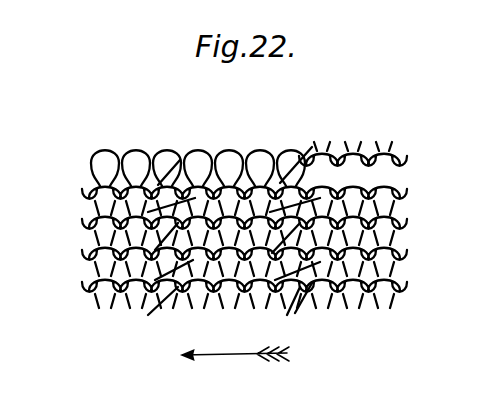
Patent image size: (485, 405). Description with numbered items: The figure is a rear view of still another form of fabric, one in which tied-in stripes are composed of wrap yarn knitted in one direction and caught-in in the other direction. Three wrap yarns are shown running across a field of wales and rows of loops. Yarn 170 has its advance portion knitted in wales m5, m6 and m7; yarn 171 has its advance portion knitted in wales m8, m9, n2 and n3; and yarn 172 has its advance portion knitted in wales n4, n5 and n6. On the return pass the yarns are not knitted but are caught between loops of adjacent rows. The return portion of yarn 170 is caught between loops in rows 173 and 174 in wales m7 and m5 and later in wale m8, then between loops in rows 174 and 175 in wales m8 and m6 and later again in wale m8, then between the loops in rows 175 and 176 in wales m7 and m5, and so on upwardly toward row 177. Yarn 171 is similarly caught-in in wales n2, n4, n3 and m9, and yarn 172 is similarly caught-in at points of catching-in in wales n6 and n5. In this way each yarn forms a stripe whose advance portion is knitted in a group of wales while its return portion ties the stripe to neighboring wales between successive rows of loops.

The yarn 170 is at (330, 302).
The yarn 171 is at (208, 302).
The yarn 172 is at (113, 302).
The row 173 is at (223, 297).
The row 174 is at (223, 264).
The row 175 is at (223, 235).
The row 176 is at (223, 202).
The row 177 is at (223, 154).
The wale n2 is at (229, 153).
The wale n3 is at (198, 153).
The wale n4 is at (167, 153).
The wale n5 is at (136, 153).
The wale n6 is at (105, 153).
The wale m5 is at (384, 143).
The wale m6 is at (349, 143).
The wale m7 is at (318, 143).
The wale m8 is at (291, 153).
The wale m9 is at (260, 153).